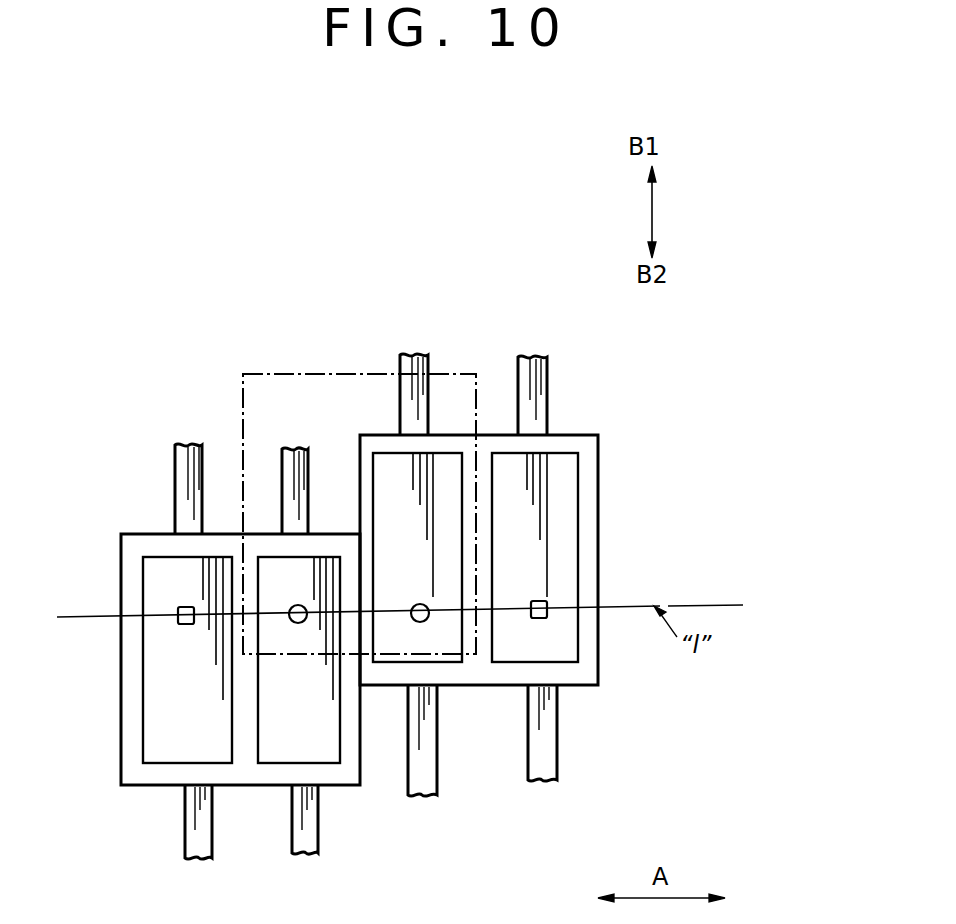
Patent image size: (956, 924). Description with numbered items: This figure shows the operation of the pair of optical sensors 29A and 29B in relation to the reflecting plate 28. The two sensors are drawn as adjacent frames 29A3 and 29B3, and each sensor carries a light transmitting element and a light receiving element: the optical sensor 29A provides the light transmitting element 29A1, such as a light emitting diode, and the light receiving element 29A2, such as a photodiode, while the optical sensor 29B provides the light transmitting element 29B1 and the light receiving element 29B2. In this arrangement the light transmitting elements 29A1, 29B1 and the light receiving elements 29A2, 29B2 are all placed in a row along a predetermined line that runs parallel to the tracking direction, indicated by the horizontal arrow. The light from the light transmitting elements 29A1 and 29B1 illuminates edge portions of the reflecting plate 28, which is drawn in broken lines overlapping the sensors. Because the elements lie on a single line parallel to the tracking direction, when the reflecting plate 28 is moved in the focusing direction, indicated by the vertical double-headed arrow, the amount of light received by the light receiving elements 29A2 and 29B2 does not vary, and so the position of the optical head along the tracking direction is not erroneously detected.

The reflecting plate 28 is at (442, 373).
The optical sensor 29A is at (612, 525).
The light transmitting element 29A1 is at (427, 621).
The light receiving element 29A2 is at (547, 600).
The frame of first gripping member 29A3 is at (592, 435).
The optical sensor 29B is at (120, 662).
The light transmitting element 29B1 is at (298, 605).
The light receiving element 29B2 is at (185, 607).
The frame of second gripping member 29B3 is at (127, 570).